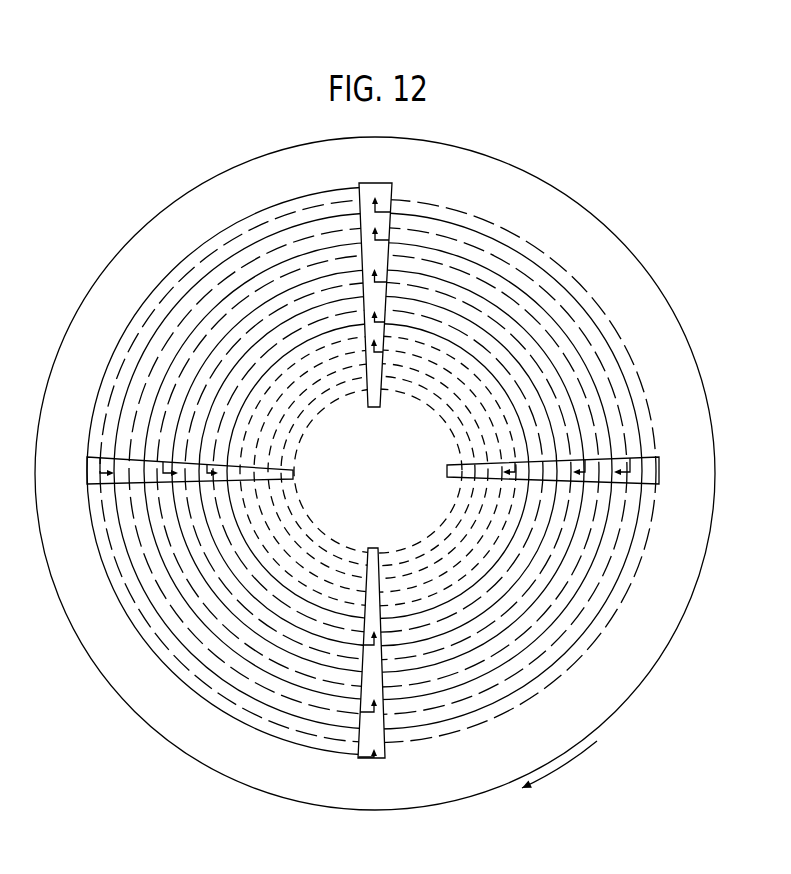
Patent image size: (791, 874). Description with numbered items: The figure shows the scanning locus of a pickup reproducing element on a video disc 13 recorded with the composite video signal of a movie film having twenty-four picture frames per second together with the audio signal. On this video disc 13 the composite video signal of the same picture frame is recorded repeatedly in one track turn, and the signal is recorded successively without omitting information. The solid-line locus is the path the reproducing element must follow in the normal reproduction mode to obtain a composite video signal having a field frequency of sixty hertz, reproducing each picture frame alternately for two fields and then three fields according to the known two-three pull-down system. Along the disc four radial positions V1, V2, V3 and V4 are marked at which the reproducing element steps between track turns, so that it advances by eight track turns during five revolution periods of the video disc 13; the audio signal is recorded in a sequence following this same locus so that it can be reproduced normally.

The video disc 13 is at (170, 203).
The first radial channel V1 is at (82, 454).
The second radial channel V2 is at (402, 762).
The third radial channel V3 is at (662, 453).
The fourth radial channel V4 is at (397, 179).